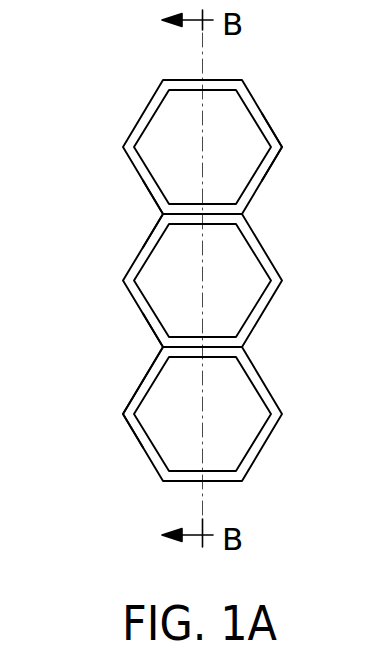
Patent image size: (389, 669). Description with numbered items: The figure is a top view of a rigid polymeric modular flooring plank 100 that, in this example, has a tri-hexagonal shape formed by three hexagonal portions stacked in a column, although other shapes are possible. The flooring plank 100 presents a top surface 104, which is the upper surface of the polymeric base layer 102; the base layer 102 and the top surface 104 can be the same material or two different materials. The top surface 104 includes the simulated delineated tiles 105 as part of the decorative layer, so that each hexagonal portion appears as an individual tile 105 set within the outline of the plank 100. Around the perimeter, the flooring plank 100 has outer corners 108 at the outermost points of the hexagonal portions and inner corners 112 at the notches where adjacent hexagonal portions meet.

The rigid polymeric modular flooring plank 100 is at (202, 266).
The polymeric base layer 102 is at (262, 307).
The top surface 104 is at (222, 258).
The simulated delineated tiles 105 is at (250, 266).
The outer corners 108 is at (282, 147).
The inner corners 112 is at (162, 214).